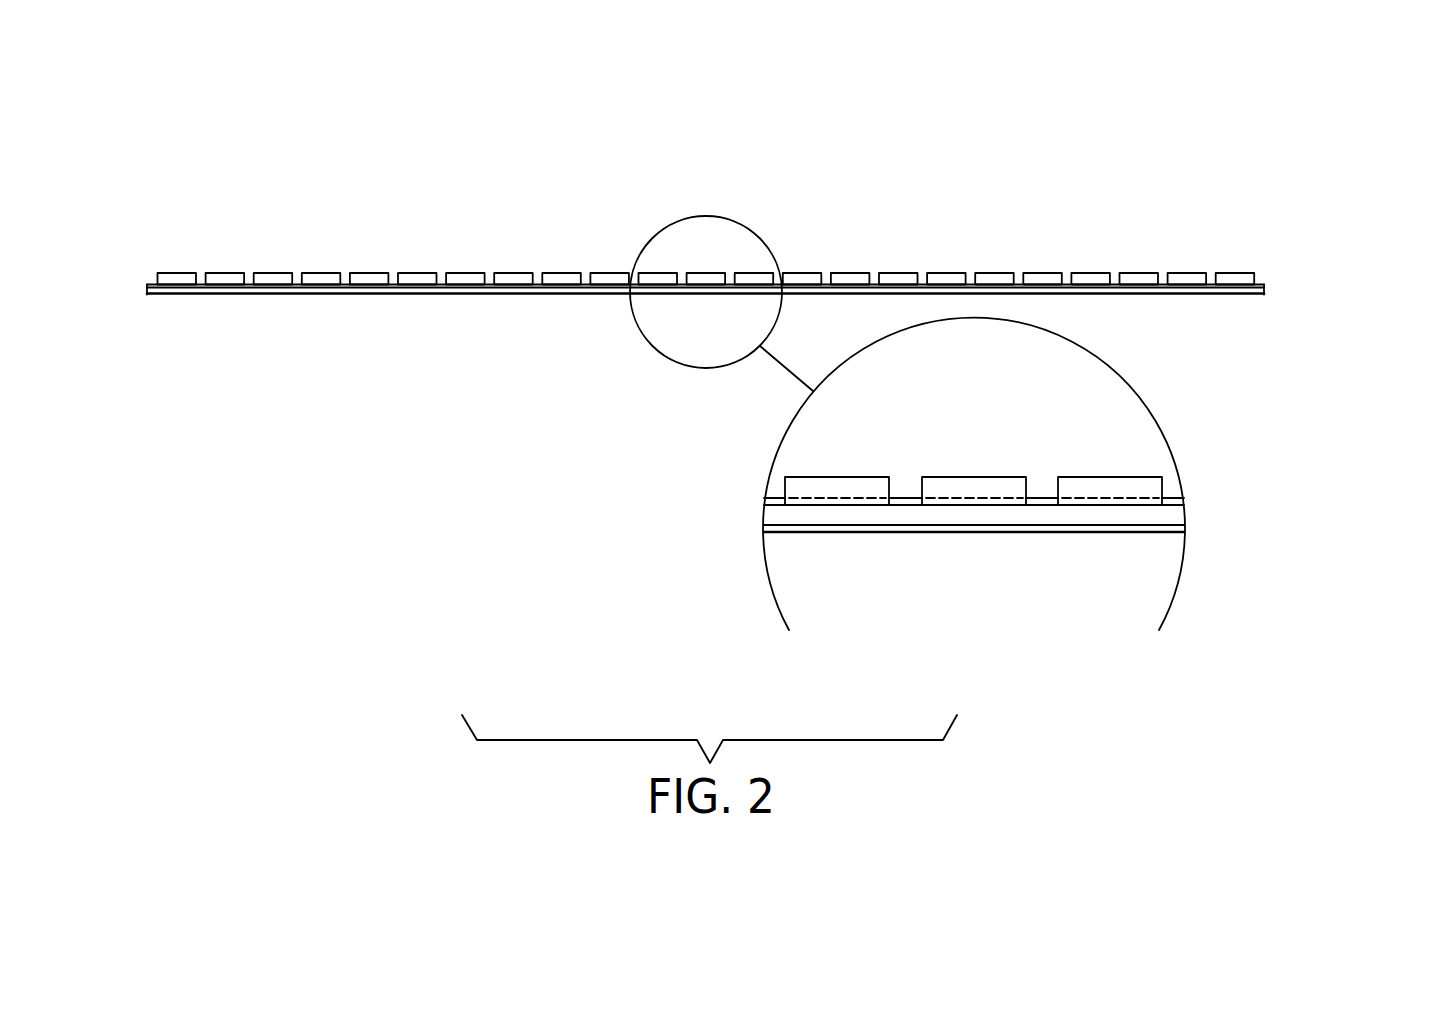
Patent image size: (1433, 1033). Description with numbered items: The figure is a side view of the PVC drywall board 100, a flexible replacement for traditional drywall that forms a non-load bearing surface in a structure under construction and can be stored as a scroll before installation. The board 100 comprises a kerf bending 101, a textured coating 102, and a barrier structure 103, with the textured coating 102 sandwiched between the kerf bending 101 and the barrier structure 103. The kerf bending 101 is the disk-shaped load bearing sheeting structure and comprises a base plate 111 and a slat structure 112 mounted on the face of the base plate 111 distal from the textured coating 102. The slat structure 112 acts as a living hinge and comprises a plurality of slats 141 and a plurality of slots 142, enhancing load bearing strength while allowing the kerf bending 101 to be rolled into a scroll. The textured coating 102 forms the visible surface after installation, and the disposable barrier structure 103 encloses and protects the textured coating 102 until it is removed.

The PVC drywall board 100 is at (170, 168).
The kerf bending 101 is at (1098, 519).
The textured coating 102 is at (1022, 513).
The barrier structure 103 is at (973, 532).
The base plate 111 is at (1092, 498).
The slat structure 112 is at (1066, 419).
The slats 141 is at (1105, 468).
The slots 142 is at (1039, 487).